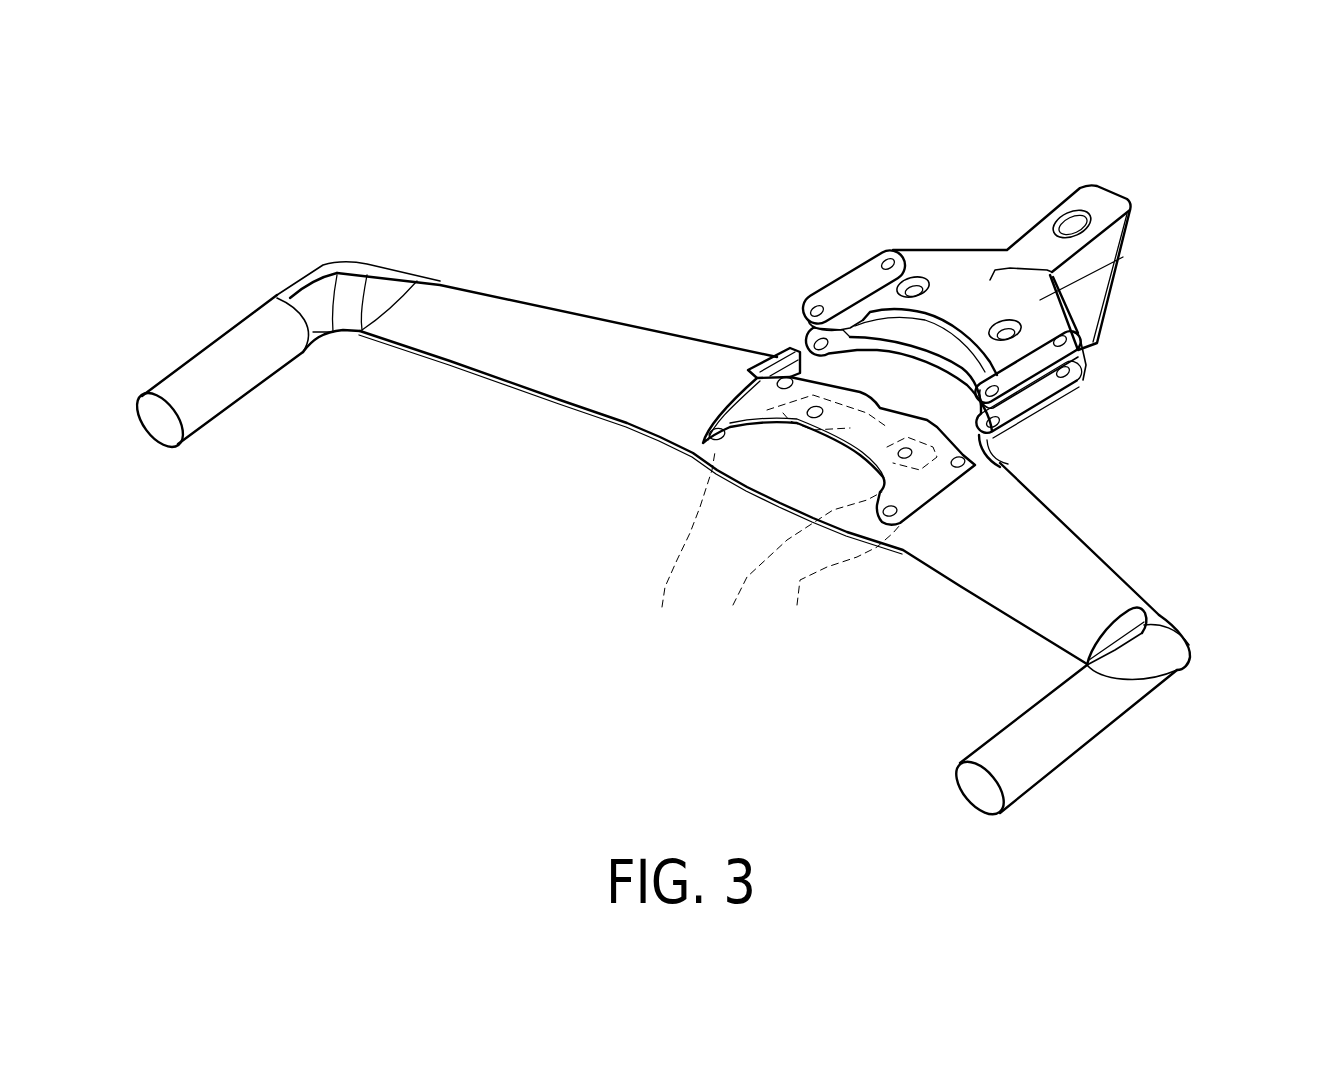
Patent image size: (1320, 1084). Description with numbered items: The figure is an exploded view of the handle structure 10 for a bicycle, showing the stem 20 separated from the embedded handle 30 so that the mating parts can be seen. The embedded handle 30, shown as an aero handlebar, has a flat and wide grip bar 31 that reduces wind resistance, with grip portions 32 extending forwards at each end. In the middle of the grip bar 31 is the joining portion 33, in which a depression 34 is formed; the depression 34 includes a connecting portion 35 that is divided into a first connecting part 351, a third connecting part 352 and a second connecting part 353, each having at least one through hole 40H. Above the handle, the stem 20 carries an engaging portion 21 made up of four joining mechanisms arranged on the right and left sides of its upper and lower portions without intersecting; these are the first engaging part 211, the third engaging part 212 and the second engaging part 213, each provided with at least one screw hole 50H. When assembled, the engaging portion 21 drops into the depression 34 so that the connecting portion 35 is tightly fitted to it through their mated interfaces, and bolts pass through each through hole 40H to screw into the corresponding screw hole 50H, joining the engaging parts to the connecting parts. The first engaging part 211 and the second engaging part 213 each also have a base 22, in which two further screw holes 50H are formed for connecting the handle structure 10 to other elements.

The handle structure 10 is at (1022, 186).
The stem 20 is at (944, 272).
The engaging portion 21 is at (1025, 404).
The first engaging part 211 is at (981, 453).
The third engaging part 212 is at (985, 417).
The second engaging part 213 is at (1045, 410).
The base 22 is at (848, 282).
The embedded handle 30 is at (477, 378).
The grip bar 31 is at (530, 367).
The grip portion 32 is at (227, 380).
The joining portion 33 is at (863, 572).
The depression 34 is at (845, 428).
The connecting portion 35 is at (766, 581).
The first connecting part 351 is at (676, 551).
The third connecting part 352 is at (793, 571).
The second connecting part 353 is at (836, 587).
The through hole 40H is at (718, 426).
The screw hole 50H is at (819, 304).